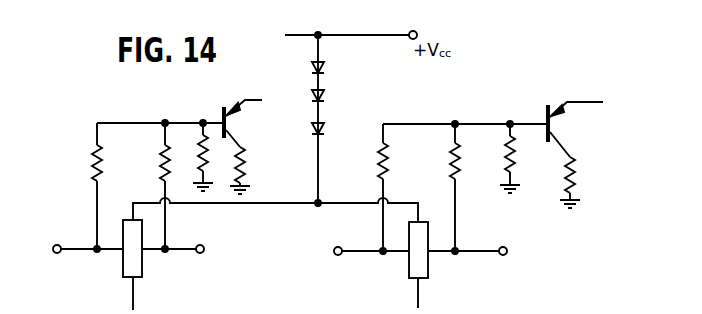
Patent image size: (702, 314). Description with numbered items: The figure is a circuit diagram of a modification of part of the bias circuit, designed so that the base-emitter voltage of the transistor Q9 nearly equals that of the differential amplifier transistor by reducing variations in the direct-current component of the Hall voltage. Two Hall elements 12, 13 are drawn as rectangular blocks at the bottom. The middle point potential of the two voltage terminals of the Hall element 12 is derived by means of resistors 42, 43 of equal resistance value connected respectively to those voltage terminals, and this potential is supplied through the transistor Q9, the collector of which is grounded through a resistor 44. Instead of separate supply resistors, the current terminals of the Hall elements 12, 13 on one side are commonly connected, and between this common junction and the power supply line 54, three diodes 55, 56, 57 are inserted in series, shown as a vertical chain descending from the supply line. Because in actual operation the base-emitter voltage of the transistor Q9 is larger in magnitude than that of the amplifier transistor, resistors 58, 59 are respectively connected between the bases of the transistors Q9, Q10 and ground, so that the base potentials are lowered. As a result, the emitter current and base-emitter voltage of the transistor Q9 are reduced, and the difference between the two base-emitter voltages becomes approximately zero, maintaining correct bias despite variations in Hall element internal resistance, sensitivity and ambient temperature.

The Hall element 12 is at (143, 266).
The Hall element 13 is at (429, 270).
The resistor 42 is at (92, 162).
The resistor 43 is at (160, 162).
The resistor 44 is at (247, 163).
The power supply line 54 is at (383, 37).
The diode 55 is at (325, 129).
The diode 56 is at (325, 97).
The diode 57 is at (311, 66).
The resistor 58 is at (200, 150).
The resistor 59 is at (505, 150).
The transistor Q9 is at (232, 126).
The transistor Q10 is at (556, 127).